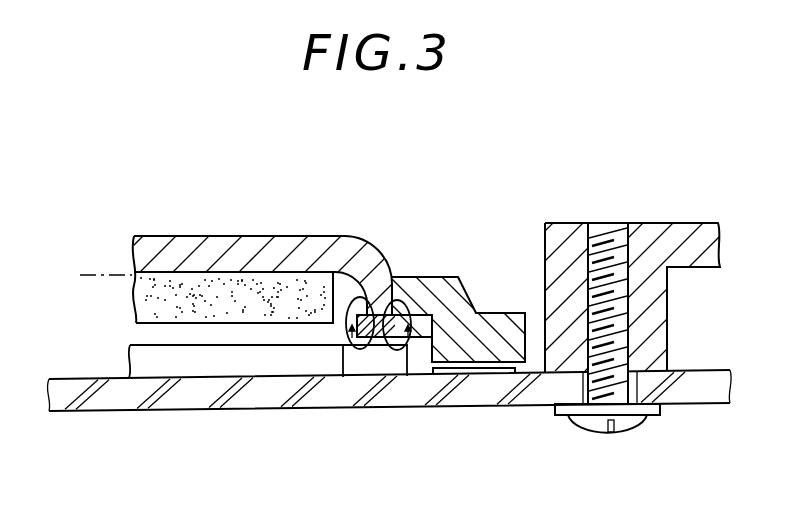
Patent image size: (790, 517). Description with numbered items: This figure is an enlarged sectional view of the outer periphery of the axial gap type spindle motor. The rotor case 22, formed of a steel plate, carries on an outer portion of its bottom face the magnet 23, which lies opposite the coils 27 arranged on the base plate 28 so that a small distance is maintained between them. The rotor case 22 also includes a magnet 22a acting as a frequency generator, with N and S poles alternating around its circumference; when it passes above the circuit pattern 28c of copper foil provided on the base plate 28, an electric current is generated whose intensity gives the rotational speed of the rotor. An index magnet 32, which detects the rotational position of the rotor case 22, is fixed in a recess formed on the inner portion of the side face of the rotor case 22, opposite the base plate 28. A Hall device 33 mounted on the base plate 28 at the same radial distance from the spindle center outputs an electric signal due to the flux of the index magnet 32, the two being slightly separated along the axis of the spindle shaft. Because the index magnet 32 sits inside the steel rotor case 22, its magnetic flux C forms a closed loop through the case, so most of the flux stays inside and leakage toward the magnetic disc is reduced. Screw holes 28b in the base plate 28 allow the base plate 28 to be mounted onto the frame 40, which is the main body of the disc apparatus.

The rotor case 22 is at (198, 236).
The magnet 22a is at (528, 318).
The magnet 23 is at (153, 283).
The coils 27 is at (223, 363).
The base plate 28 is at (113, 402).
The screw holes 28b is at (585, 418).
The circuit pattern 28c is at (474, 374).
The index magnet 32 is at (363, 280).
The Hall device 33 is at (363, 365).
The frame 40 is at (655, 232).
The magnetic flux C is at (355, 348).